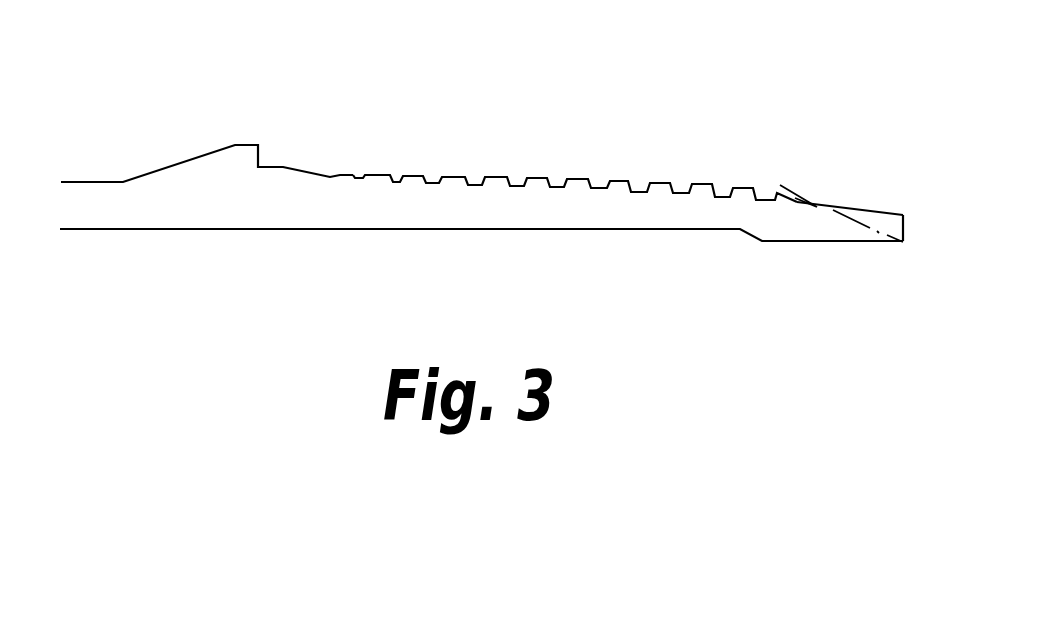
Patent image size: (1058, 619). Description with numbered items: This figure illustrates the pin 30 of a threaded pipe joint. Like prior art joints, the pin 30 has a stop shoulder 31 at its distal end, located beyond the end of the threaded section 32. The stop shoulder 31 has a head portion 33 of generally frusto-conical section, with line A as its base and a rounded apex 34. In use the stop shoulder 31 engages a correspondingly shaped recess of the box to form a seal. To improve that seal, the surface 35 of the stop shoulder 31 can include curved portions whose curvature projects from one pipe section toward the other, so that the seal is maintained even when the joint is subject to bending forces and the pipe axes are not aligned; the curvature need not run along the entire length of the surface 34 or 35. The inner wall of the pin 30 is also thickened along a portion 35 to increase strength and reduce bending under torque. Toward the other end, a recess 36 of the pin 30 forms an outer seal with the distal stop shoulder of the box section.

The pin 30 is at (383, 114).
The stop shoulder 31 is at (840, 230).
The threaded section 32 is at (802, 168).
The head portion 33 is at (887, 222).
The rounded apex 34 is at (903, 215).
The surface of the stop shoulder 35 is at (850, 207).
The recess 36 is at (282, 158).
The line A is at (903, 241).